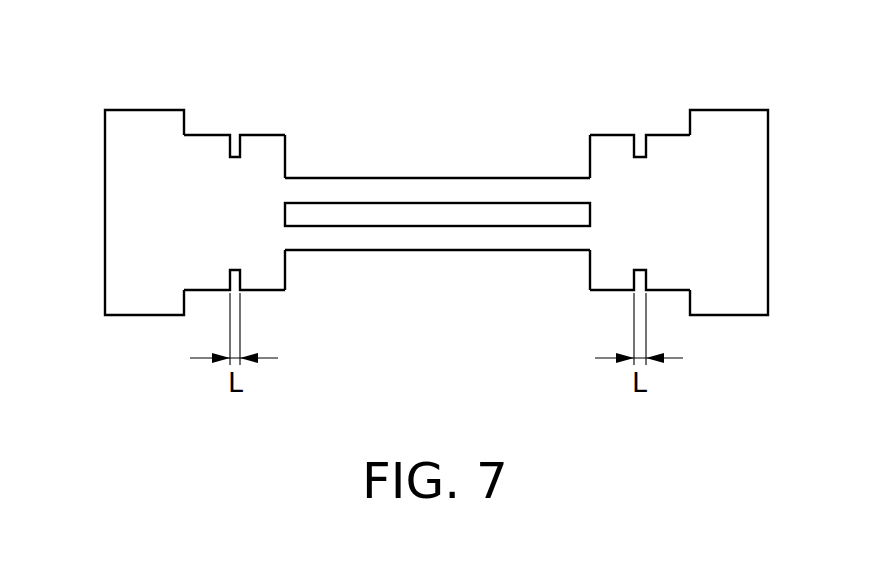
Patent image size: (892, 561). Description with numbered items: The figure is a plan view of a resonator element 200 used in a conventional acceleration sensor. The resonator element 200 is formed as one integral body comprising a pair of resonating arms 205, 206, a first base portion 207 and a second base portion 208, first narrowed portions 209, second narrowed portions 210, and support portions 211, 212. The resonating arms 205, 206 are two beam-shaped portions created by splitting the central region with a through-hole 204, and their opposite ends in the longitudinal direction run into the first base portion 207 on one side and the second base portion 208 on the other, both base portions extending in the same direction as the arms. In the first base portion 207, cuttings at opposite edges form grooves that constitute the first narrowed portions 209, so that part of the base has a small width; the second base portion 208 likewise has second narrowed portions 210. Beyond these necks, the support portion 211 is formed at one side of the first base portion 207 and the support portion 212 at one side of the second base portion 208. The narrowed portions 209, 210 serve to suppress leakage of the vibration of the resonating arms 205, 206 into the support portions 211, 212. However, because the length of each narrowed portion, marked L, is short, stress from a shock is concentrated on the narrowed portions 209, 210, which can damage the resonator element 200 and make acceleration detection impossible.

The resonator element 200 is at (389, 165).
The through-hole 204 is at (415, 215).
The resonating arm 205 is at (498, 190).
The resonating arm 206 is at (495, 240).
The first base portion 207 is at (265, 168).
The second base portion 208 is at (609, 170).
The first narrowed portions 209 is at (234, 150).
The second narrowed portions 210 is at (640, 150).
The support portion 211 is at (147, 120).
The support portion 212 is at (727, 120).